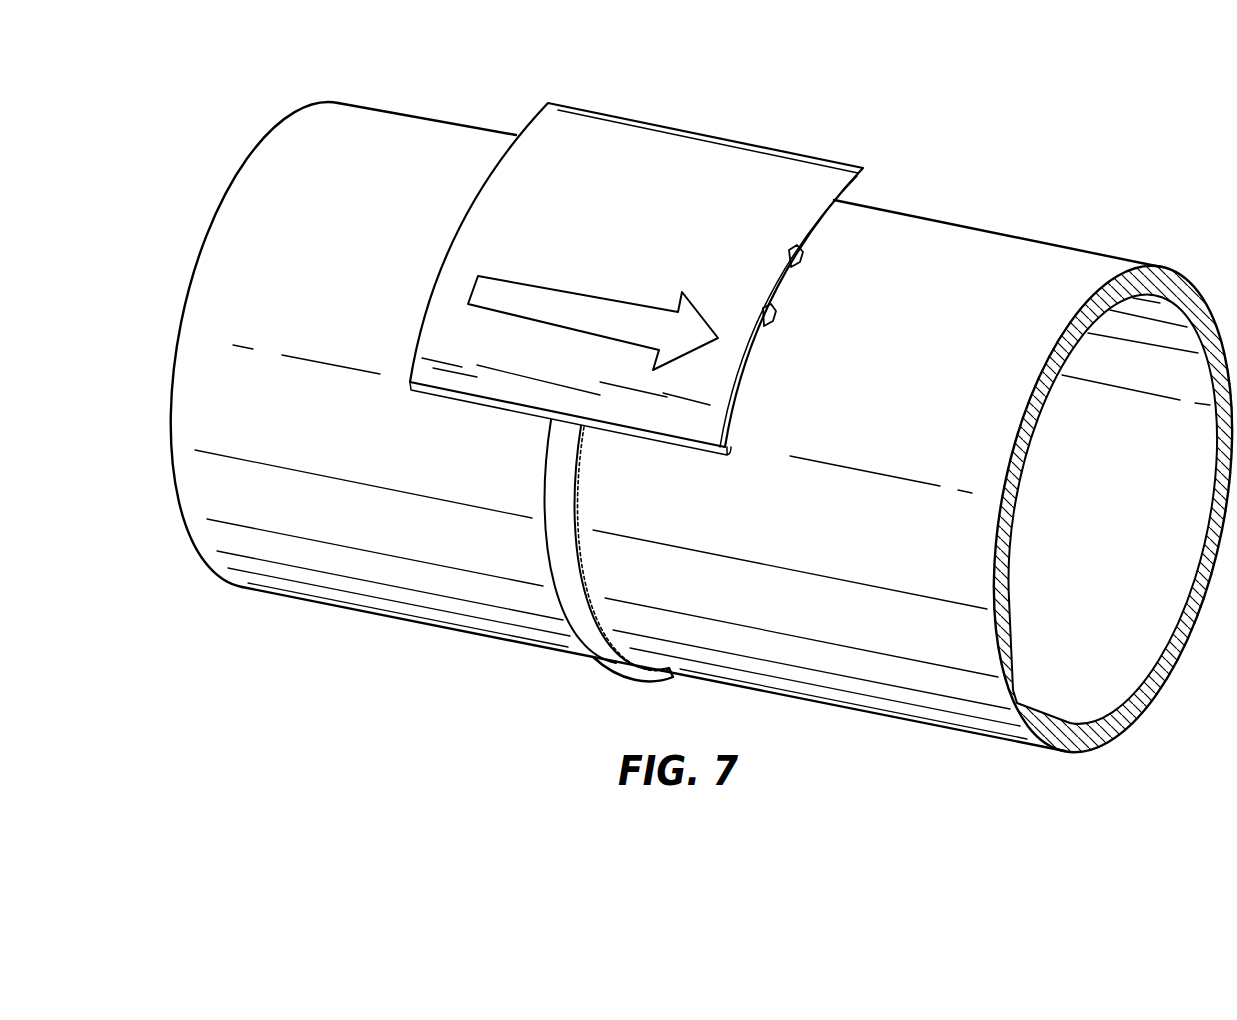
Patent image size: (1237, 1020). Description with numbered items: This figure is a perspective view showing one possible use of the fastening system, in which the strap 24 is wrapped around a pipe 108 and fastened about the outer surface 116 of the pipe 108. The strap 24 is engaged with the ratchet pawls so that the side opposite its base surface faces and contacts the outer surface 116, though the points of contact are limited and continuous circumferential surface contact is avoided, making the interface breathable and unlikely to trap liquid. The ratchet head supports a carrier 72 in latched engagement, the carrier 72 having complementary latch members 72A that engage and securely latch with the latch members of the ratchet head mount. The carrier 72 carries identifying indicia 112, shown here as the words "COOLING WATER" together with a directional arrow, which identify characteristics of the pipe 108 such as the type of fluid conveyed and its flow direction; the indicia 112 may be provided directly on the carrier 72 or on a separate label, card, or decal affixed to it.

The strap 24 is at (572, 598).
The carrier 72 is at (822, 172).
The latch member 72A is at (774, 309).
The pipe 108 is at (275, 197).
The identifying indicia 112 is at (480, 262).
The outer surface 116 is at (358, 324).